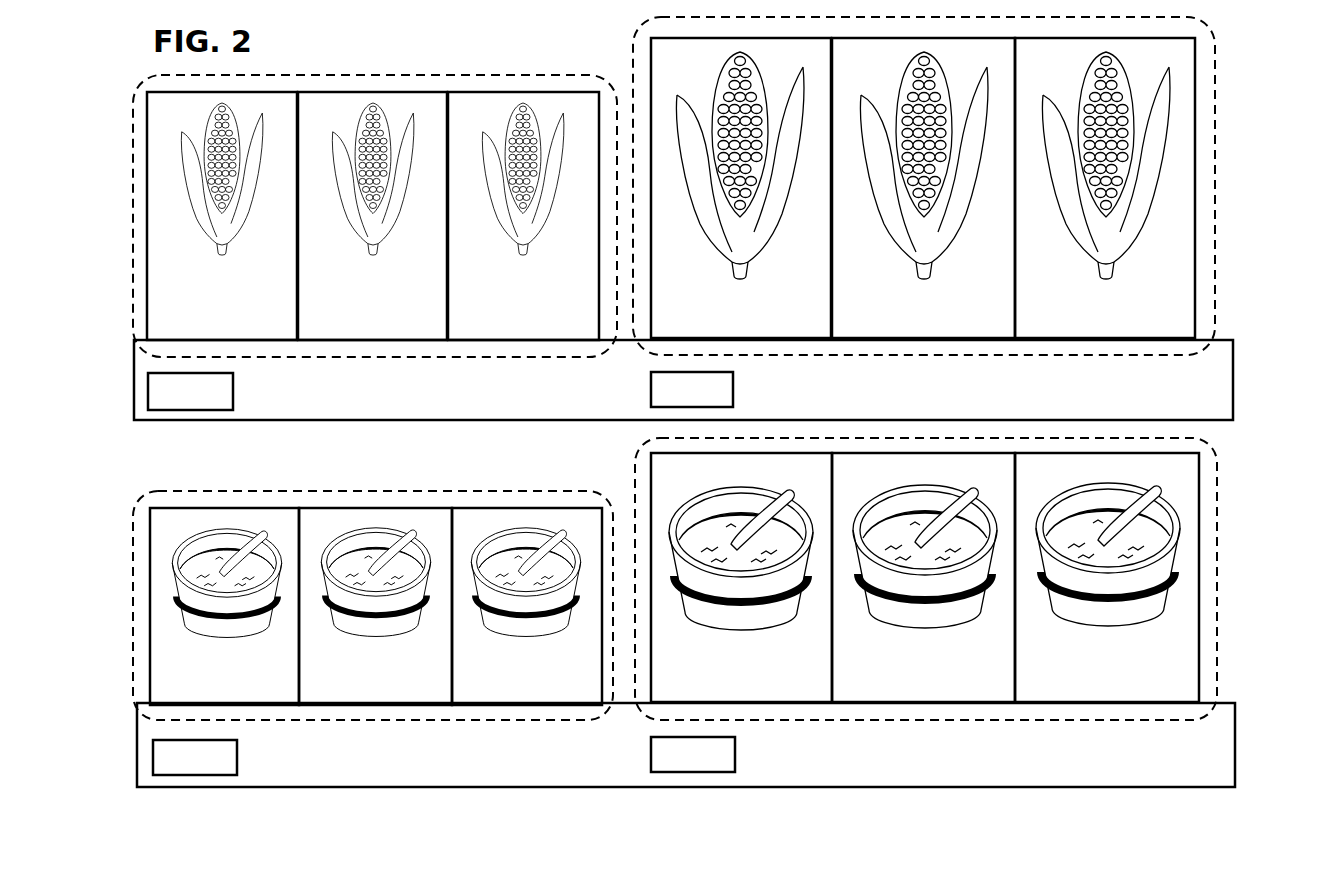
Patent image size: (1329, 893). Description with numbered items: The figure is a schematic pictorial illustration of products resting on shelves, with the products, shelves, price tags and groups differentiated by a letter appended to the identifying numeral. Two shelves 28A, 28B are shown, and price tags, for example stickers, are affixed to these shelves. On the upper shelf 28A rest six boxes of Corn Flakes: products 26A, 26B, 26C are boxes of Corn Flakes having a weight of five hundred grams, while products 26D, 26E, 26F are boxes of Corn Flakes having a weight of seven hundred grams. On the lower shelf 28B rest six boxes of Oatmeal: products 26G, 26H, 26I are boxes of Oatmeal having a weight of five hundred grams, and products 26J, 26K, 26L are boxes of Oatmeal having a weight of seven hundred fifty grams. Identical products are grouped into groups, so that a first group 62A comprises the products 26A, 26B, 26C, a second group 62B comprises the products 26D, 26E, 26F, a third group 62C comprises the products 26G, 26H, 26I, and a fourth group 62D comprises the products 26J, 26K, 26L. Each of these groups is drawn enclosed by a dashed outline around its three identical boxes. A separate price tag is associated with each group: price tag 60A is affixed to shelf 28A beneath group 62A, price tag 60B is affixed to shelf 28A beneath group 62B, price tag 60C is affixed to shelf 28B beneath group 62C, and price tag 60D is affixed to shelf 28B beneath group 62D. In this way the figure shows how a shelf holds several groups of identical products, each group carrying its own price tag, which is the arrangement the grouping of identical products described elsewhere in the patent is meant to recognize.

The product 26A is at (192, 121).
The product 26B is at (343, 121).
The product 26C is at (493, 121).
The product 26D is at (692, 68).
The product 26E is at (875, 66).
The product 26F is at (1057, 66).
The product 26G is at (195, 536).
The product 26H is at (344, 536).
The product 26I is at (484, 536).
The product 26J is at (690, 485).
The product 26K is at (875, 483).
The product 26L is at (1056, 483).
The shelf 28A is at (1236, 385).
The shelf 28B is at (1238, 752).
The price tag 60A is at (235, 390).
The price tag 60B is at (735, 388).
The price tag 60C is at (239, 756).
The price tag 60D is at (737, 753).
The group 62A is at (372, 75).
The group 62B is at (1218, 190).
The group 62C is at (356, 491).
The group 62D is at (1220, 520).